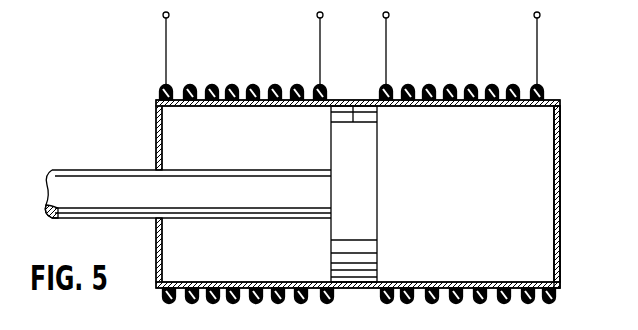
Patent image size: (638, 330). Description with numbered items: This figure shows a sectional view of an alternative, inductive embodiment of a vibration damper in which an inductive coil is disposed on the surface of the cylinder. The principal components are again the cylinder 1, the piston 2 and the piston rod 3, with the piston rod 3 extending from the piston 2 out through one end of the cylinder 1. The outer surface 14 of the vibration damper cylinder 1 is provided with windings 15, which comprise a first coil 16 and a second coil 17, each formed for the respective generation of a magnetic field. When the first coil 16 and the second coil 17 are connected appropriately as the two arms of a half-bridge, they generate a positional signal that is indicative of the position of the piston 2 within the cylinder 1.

The cylinder 1 is at (456, 85).
The piston 2 is at (357, 100).
The piston rod 3 is at (97, 183).
The outer surface 14 is at (550, 97).
The windings 15 is at (233, 84).
The first coil 16 is at (190, 78).
The second coil 17 is at (491, 77).